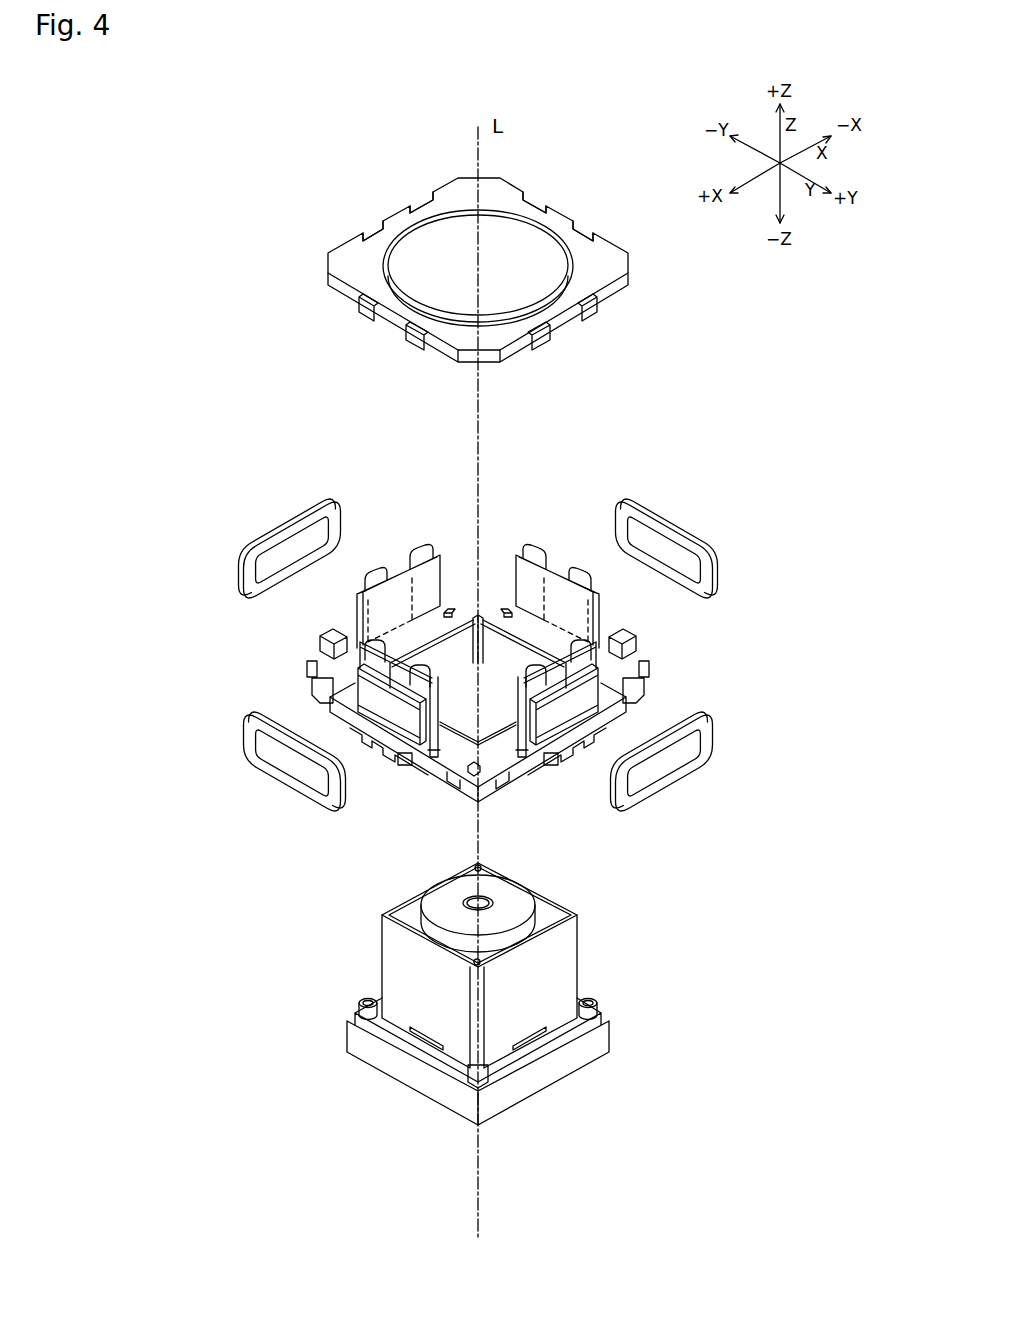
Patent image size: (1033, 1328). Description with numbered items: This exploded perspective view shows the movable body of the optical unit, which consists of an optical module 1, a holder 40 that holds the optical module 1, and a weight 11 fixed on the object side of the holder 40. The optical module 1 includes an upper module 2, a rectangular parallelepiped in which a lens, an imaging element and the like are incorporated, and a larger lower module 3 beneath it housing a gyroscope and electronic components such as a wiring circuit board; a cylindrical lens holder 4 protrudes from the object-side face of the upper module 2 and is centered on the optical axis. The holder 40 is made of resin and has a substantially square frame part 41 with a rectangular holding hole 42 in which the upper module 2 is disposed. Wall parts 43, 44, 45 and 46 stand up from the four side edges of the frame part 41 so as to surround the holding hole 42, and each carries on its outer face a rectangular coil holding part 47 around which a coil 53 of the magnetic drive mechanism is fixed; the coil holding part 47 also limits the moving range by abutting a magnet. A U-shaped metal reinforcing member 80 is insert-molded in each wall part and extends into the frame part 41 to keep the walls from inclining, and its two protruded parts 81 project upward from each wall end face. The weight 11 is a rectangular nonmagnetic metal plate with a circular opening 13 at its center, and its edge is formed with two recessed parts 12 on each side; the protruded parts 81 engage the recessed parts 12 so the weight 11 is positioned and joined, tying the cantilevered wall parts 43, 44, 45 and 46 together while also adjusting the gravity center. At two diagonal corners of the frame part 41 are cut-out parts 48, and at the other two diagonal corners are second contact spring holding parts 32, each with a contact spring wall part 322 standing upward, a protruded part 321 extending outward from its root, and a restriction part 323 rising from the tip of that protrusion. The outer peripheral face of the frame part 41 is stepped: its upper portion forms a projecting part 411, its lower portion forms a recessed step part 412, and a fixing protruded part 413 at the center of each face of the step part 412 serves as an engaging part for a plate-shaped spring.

The optical module 1 is at (557, 994).
The upper module 2 is at (515, 975).
The lower module 3 is at (605, 1042).
The lens holder 4 is at (525, 897).
The weight 11 is at (478, 234).
The recessed part 12 is at (421, 204).
The circular opening 13 is at (510, 233).
The second contact spring holding part 32 is at (474, 657).
The protruded part 321 is at (312, 684).
The contact spring wall part 322 is at (320, 645).
The restriction part 323 is at (308, 668).
The holder 40 is at (544, 674).
The frame part 41 is at (510, 766).
The projecting part 411 is at (426, 762).
The step part 412 is at (422, 775).
The fixing protruded part 413 is at (401, 766).
The holding hole 42 is at (478, 650).
The wall part 43 is at (432, 708).
The wall part 44 is at (512, 573).
The wall part 45 is at (520, 707).
The wall part 46 is at (440, 590).
The coil holding part 47 is at (372, 703).
The cut-out part 48 is at (452, 610).
The coil 53 is at (290, 530).
The reinforcing member 80 is at (478, 573).
The protruded part 81 is at (420, 547).